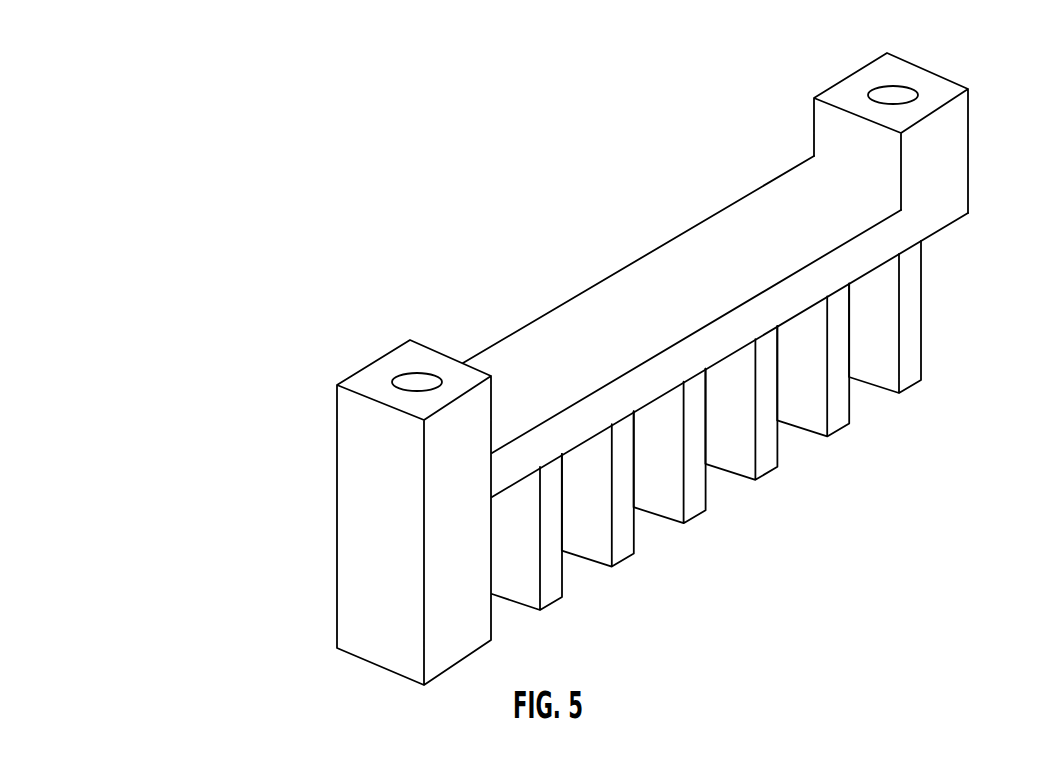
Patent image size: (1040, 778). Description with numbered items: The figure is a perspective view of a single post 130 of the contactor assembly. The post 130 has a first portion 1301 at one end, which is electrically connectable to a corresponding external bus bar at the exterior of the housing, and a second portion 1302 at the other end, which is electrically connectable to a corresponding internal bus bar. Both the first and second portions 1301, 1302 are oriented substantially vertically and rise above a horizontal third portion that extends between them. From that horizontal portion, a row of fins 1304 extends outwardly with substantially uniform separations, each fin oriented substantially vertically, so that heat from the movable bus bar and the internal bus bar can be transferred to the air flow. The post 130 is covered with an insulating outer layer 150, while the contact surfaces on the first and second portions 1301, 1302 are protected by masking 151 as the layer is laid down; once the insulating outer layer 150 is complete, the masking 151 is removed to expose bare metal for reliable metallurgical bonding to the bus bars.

The post 130 is at (585, 364).
The insulating outer layer 150 is at (690, 298).
The masking 151 is at (843, 102).
The first portion 1301 is at (813, 132).
The second portion 1302 is at (335, 400).
The fins 1304 is at (550, 577).